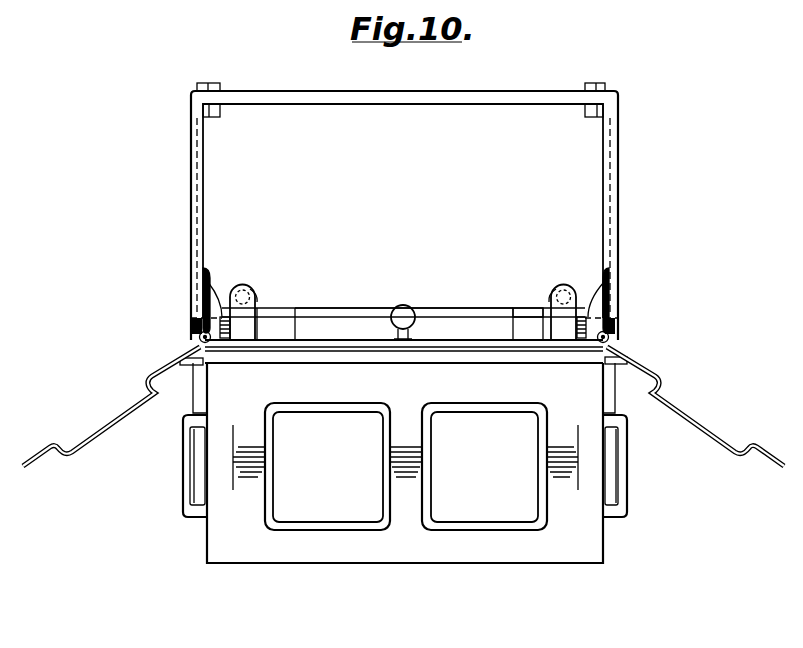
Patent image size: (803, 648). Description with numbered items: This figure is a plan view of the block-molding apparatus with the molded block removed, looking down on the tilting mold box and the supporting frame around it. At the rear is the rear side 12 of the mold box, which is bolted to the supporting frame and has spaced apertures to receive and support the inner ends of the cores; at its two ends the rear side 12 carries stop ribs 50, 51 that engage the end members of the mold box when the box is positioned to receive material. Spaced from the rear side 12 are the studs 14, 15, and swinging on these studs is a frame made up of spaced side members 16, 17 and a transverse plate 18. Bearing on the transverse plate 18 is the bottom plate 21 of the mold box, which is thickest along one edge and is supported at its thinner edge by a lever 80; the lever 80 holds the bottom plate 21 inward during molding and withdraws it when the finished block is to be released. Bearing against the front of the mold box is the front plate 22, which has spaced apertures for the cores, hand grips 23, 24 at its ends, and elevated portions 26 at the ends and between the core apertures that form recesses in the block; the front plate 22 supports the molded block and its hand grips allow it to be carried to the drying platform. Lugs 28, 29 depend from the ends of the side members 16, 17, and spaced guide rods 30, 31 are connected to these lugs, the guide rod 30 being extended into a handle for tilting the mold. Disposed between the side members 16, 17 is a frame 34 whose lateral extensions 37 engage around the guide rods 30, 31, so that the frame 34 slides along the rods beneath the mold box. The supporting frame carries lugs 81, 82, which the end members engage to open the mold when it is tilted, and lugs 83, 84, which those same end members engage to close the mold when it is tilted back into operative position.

The rear side of the mold box 12 is at (495, 96).
The stud 14 is at (224, 315).
The stud 15 is at (581, 315).
The side member 16 is at (266, 326).
The side member 17 is at (567, 330).
The transverse plate 18 is at (367, 340).
The bottom plate 21 is at (333, 362).
The front plate 22 is at (407, 552).
The hand grip 23 is at (173, 466).
The hand grip 24 is at (629, 472).
The elevated portions 26 is at (248, 450).
The lug 28 is at (243, 284).
The lug 29 is at (562, 284).
The guide rod 30 is at (256, 299).
The guide rod 31 is at (561, 300).
The frame 34 is at (463, 307).
The lateral extensions 37 is at (251, 290).
The stop rib 50 is at (191, 112).
The stop rib 51 is at (613, 117).
The lever 80 is at (411, 314).
The lug 81 is at (188, 367).
The lug 82 is at (623, 366).
The lug 83 is at (200, 296).
The lug 84 is at (618, 292).